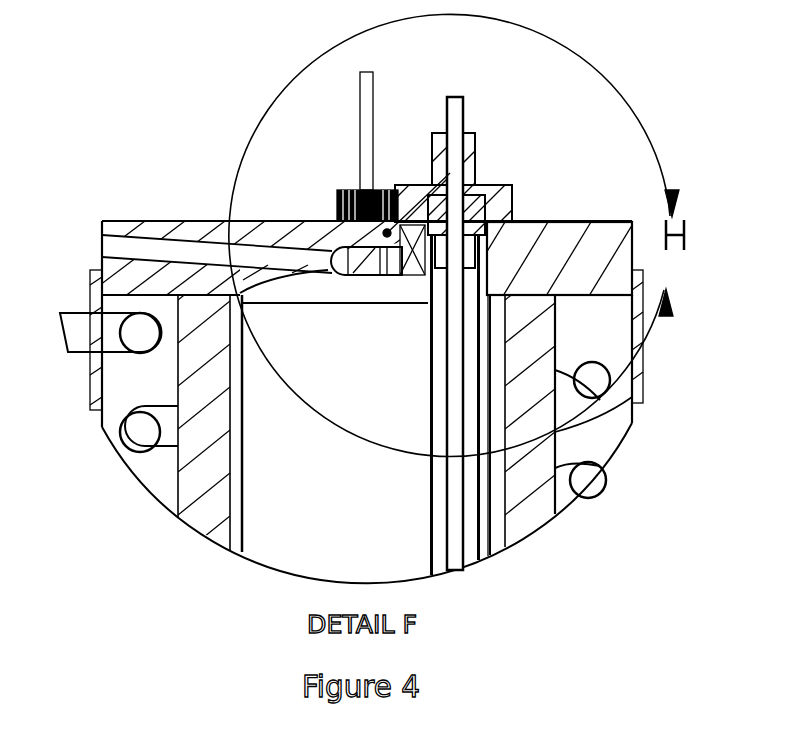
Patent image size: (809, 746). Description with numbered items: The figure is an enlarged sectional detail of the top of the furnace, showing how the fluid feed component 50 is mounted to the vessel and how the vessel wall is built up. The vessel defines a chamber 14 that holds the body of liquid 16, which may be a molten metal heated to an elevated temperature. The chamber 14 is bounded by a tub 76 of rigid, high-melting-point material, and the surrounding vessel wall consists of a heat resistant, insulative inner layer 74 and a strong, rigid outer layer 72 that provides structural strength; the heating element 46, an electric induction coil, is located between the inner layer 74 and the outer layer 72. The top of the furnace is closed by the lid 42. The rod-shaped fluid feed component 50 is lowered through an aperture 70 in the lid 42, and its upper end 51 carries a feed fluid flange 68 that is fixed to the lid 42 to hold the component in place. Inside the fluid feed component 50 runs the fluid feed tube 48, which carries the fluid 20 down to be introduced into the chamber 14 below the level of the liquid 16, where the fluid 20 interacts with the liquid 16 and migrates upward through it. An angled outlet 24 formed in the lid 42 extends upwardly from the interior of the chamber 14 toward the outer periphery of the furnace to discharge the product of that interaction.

The chamber 14 is at (302, 550).
The body of liquid 16 is at (327, 507).
The fluid 20 is at (453, 120).
The outlet 24 is at (115, 247).
The lid 42 is at (583, 233).
The heating element 46 is at (135, 333).
The fluid feed tube 48 is at (463, 117).
The fluid feed component 50 is at (506, 40).
The upper end 51 is at (590, 144).
The feed fluid flange 68 is at (497, 196).
The aperture 70 is at (497, 245).
The outer layer 72 is at (97, 407).
The inner layer 74 is at (205, 522).
The tub 76 is at (236, 545).